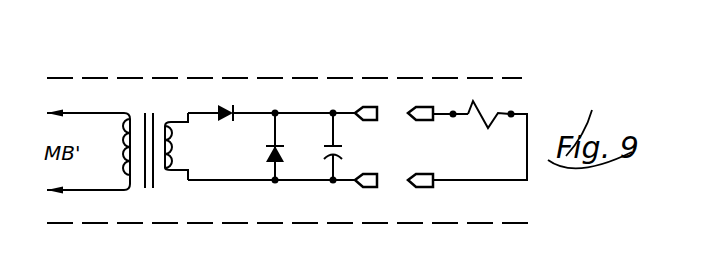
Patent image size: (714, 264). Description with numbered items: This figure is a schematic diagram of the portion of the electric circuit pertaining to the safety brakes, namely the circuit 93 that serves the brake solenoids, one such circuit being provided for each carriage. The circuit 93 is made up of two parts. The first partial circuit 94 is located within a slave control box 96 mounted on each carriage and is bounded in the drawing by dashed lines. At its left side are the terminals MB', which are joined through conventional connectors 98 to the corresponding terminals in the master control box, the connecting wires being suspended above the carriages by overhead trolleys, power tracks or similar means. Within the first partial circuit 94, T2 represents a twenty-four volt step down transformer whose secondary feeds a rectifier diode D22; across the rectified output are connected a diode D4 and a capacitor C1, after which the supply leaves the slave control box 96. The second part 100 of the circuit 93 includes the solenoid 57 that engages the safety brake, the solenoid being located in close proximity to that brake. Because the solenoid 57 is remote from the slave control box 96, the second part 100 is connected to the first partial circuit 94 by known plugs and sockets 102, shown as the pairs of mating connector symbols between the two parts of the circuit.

The slave control box 96 is at (202, 77).
The connectors 98 is at (62, 109).
The circuit 93 is at (308, 107).
The first partial circuit 94 is at (266, 188).
The plugs and sockets 102 is at (412, 176).
The second part of circuit portion 100 is at (477, 187).
The brake solenoid 57 is at (476, 116).
The step down transformer T2 is at (155, 138).
The rectifier diode D22 is at (232, 102).
The diode D4 is at (248, 146).
The filter capacitor C1 is at (317, 146).